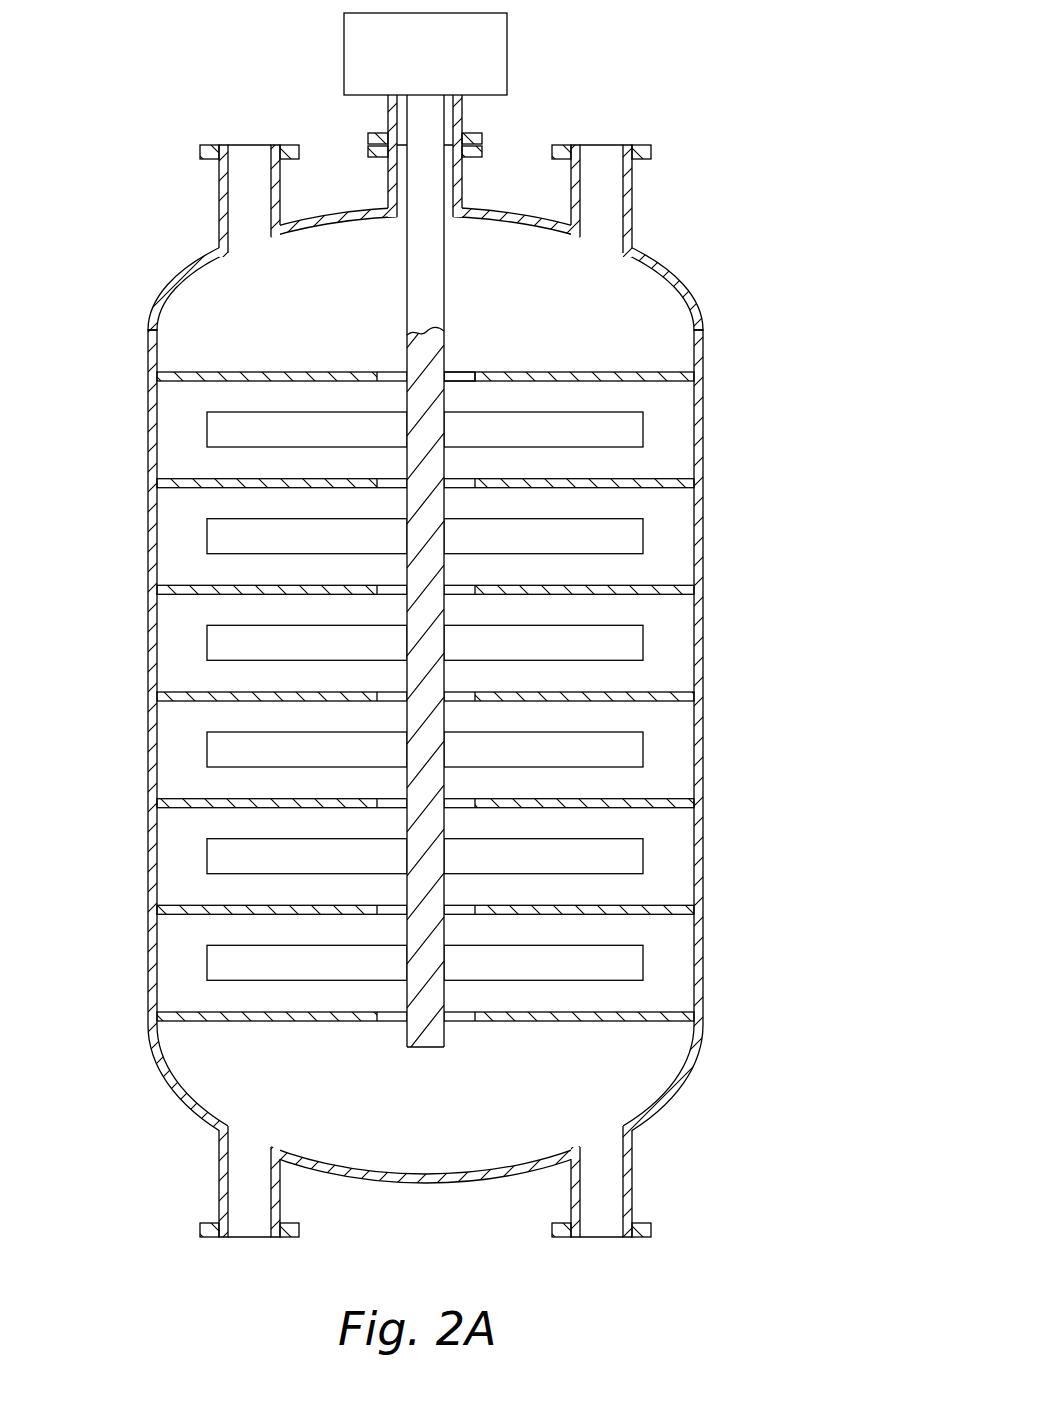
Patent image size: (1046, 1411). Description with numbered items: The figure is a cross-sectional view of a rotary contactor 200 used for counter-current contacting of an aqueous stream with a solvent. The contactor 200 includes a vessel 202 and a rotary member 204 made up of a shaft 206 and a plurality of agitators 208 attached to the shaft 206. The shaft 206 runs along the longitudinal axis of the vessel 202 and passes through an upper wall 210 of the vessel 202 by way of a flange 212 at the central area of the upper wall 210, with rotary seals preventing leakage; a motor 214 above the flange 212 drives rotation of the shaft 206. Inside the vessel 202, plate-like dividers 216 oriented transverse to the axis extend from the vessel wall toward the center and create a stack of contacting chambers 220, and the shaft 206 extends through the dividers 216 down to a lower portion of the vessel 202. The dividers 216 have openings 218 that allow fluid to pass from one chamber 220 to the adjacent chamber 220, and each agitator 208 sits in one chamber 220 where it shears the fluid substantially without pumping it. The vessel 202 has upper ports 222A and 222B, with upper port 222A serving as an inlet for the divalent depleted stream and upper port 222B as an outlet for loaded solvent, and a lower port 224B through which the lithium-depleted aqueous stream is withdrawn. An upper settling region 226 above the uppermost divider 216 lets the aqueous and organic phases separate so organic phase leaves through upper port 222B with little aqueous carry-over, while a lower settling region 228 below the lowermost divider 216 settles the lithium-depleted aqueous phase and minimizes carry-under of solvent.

The rotary contactor 200 is at (729, 37).
The vessel 202 is at (704, 358).
The rotary member 204 is at (407, 288).
The shaft 206 is at (428, 1050).
The agitators 208 is at (207, 430).
The upper wall 210 is at (178, 270).
The flange 212 is at (485, 152).
The motor 214 is at (407, 67).
The dividers 216 is at (272, 372).
The openings 218 is at (457, 372).
The contacting chambers 220 is at (637, 336).
The upper port 222A is at (200, 153).
The upper port 222B is at (651, 153).
The lower port 224B is at (200, 1230).
The upper settling region 226 is at (622, 294).
The lower settling region 228 is at (622, 1065).